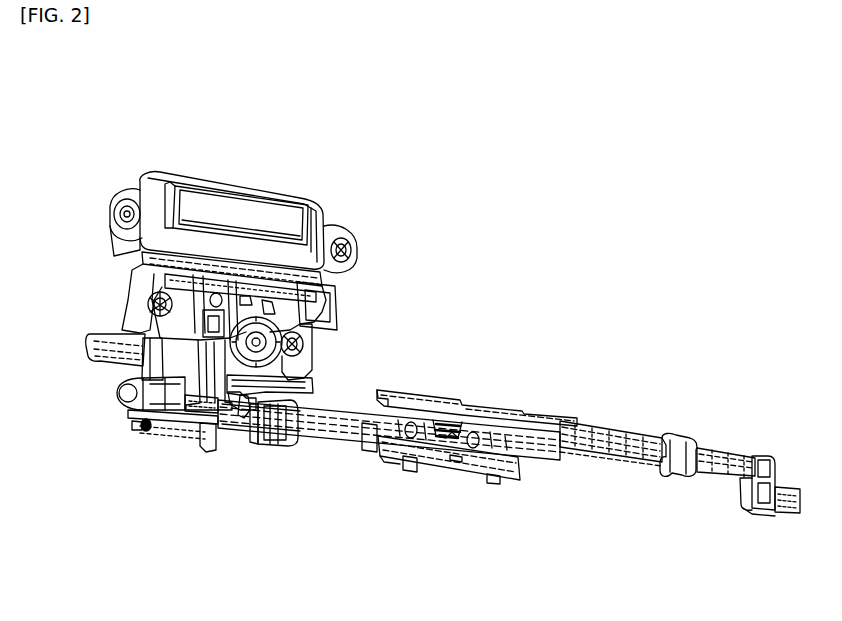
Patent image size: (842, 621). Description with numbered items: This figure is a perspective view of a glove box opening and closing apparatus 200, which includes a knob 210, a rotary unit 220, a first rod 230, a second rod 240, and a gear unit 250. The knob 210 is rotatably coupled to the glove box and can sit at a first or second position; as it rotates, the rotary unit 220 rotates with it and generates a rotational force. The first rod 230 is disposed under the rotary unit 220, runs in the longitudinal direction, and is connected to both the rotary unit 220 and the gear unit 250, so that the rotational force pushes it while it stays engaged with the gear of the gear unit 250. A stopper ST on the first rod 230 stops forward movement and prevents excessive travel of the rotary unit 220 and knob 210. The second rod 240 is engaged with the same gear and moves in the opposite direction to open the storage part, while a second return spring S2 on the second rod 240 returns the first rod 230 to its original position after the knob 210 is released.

The opening and closing apparatus 200 is at (132, 100).
The knob 210 is at (300, 196).
The rotary unit 220 is at (262, 414).
The first rod 230 is at (318, 438).
The second rod 240 is at (632, 432).
The gear unit 250 is at (457, 482).
The stopper ST is at (245, 397).
The second return spring S2 is at (172, 430).